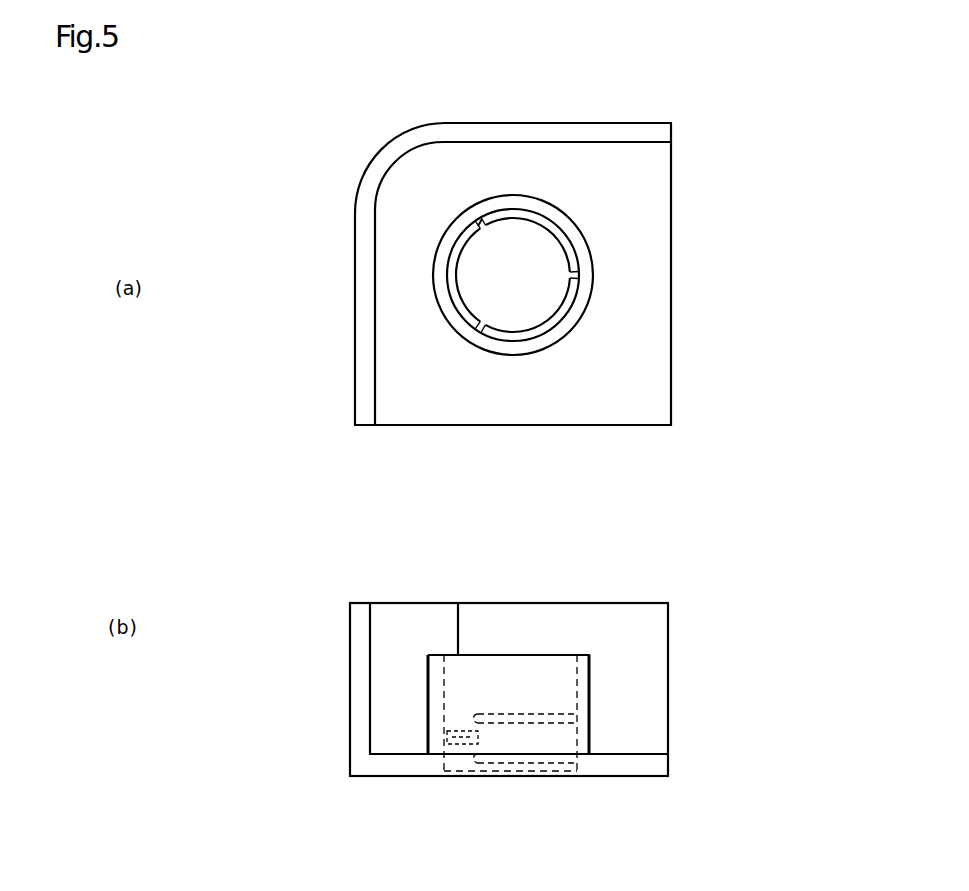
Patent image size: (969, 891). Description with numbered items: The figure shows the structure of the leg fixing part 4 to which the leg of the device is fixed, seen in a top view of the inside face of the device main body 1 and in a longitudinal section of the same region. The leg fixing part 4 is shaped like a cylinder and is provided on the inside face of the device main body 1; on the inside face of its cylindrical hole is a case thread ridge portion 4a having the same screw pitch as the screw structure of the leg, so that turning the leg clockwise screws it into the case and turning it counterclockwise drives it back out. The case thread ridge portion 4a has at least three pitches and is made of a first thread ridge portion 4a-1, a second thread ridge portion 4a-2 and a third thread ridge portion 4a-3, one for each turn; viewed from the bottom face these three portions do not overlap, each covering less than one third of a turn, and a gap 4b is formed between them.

The device main body 1 is at (353, 312).
The leg fixing part 4 is at (567, 215).
The case thread ridge portion 4a is at (541, 531).
The first thread ridge portion 4a-1 is at (567, 247).
The second thread ridge portion 4a-2 is at (455, 278).
The third thread ridge portion 4a-3 is at (548, 323).
The gap 4b is at (484, 226).